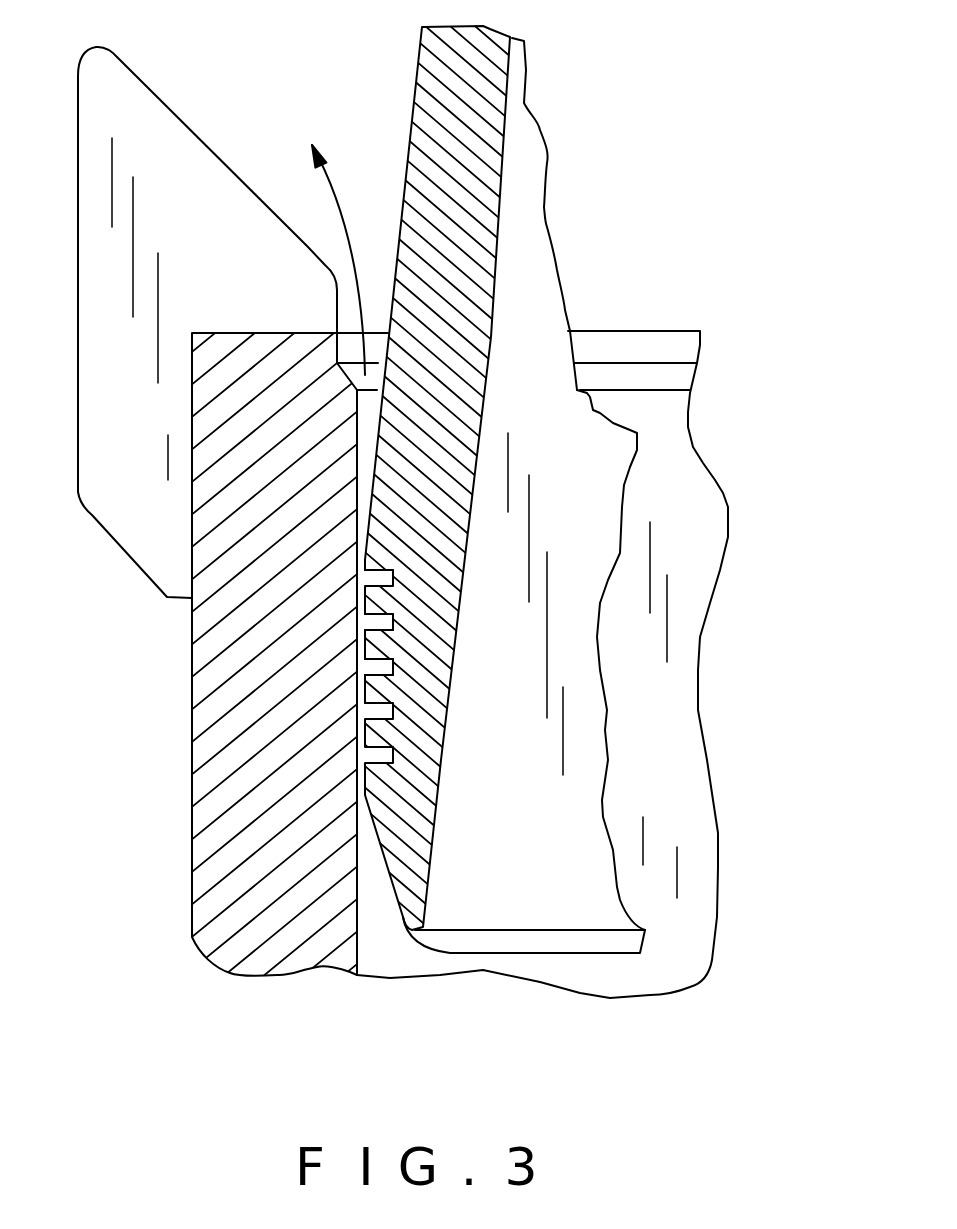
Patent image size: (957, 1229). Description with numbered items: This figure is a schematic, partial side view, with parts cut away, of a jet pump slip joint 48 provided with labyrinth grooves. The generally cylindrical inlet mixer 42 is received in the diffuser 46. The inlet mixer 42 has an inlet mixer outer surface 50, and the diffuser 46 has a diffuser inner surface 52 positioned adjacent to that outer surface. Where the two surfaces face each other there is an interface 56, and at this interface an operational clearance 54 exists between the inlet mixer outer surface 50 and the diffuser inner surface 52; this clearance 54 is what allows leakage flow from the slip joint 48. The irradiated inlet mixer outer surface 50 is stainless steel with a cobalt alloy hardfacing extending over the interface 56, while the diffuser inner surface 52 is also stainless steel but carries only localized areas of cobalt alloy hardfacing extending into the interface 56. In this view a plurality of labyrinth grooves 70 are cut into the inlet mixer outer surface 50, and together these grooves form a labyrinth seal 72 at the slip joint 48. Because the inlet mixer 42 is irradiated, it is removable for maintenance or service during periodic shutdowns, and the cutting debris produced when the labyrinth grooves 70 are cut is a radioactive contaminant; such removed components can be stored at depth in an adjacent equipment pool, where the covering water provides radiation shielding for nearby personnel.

The inlet mixer 42 is at (562, 163).
The diffuser 46 is at (171, 816).
The slip joint 48 is at (445, 1020).
The inlet mixer outer surface 50 is at (365, 693).
The diffuser inner surface 52 is at (358, 618).
The operational clearance 54 is at (363, 557).
The interface 56 is at (415, 682).
The labyrinth grooves 70 is at (405, 632).
The labyrinth seal 72 is at (388, 483).